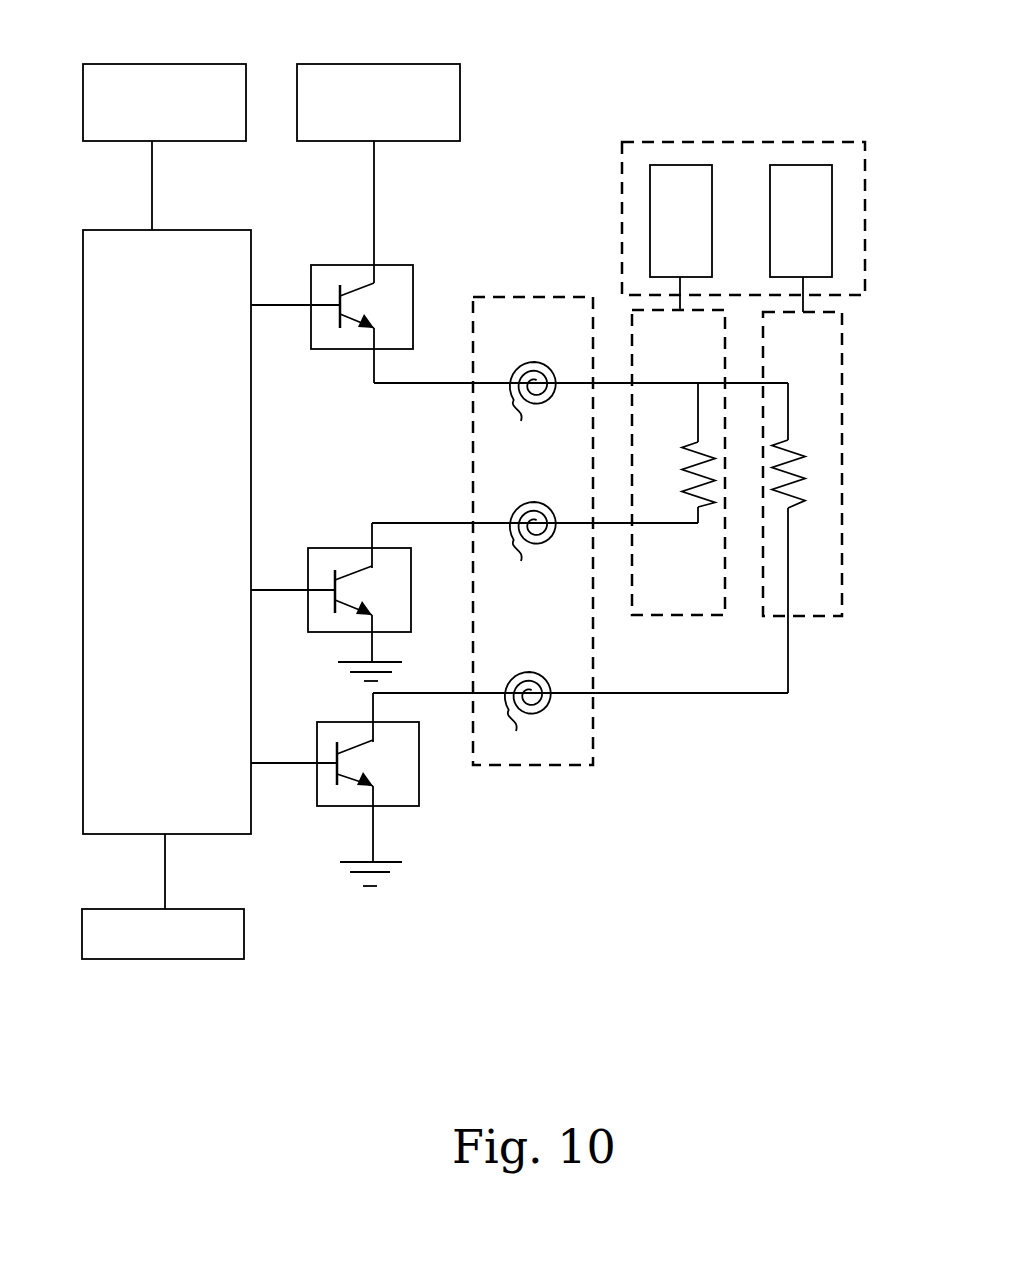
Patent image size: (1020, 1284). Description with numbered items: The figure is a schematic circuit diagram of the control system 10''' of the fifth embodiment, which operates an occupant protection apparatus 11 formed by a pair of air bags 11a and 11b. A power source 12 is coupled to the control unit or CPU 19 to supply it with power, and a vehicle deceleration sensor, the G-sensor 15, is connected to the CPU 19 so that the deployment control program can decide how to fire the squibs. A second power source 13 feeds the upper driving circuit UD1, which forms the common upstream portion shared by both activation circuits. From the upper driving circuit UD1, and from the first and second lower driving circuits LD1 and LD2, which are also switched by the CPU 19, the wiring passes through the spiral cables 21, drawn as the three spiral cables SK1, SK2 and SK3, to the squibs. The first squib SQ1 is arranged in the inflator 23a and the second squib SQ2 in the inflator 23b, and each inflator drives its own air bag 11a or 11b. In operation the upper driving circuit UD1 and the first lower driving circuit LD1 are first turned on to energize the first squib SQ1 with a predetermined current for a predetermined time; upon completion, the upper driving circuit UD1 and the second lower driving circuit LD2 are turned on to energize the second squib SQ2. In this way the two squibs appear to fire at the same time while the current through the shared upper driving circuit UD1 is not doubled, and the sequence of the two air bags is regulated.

The control system 10''' is at (637, 60).
The occupant protection apparatus 11 is at (660, 138).
The air bag 11a is at (803, 165).
The air bag 11b is at (712, 172).
The power source 12 is at (138, 62).
The power source 13 is at (344, 63).
The vehicle deceleration sensor (G-sensor) 15 is at (244, 937).
The control unit (CPU) 19 is at (123, 230).
The spiral cables 21 is at (570, 307).
The inflator 23a is at (807, 618).
The inflator 23b is at (697, 620).
The upper driving circuit UD1 is at (345, 263).
The first lower driving circuit LD1 is at (343, 547).
The second lower driving circuit LD2 is at (419, 785).
The spiral cable SK1 is at (529, 410).
The spiral cable SK2 is at (529, 564).
The spiral cable SK3 is at (526, 718).
The first squib SQ1 is at (790, 455).
The second squib SQ2 is at (708, 507).